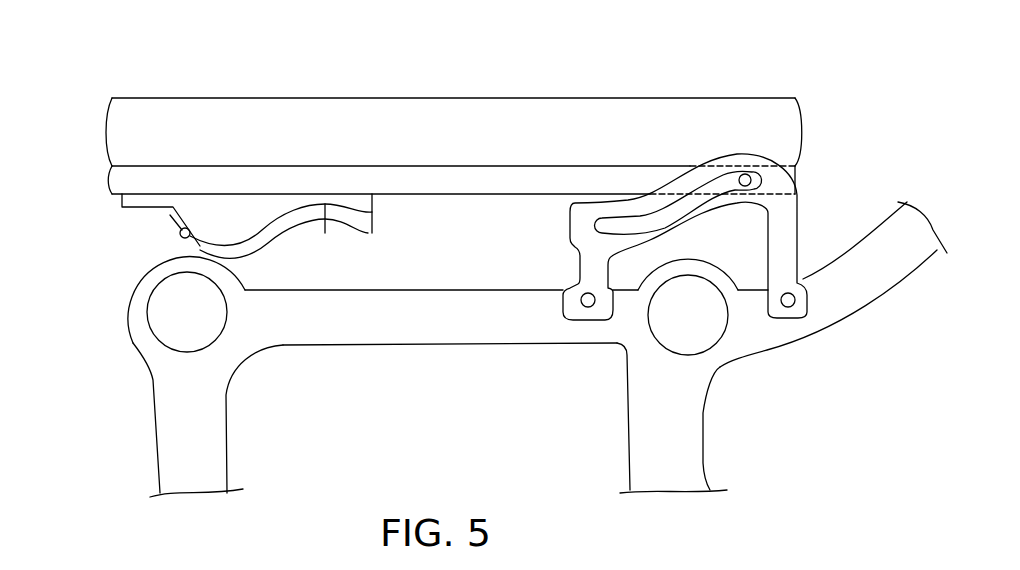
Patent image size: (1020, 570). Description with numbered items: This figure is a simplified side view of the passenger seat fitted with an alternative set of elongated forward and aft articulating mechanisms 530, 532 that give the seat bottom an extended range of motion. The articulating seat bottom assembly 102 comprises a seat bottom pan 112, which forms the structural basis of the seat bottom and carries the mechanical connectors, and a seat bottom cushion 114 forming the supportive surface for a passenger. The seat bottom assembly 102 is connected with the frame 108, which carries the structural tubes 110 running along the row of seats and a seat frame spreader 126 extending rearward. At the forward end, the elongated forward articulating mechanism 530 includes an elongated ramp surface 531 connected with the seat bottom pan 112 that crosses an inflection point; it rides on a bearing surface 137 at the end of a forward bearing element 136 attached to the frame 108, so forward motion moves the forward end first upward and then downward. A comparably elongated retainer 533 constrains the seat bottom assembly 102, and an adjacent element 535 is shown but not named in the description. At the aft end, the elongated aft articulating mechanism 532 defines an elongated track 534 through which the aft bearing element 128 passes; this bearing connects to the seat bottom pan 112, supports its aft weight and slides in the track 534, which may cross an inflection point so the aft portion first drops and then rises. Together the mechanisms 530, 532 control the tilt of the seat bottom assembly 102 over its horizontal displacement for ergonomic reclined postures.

The seat bottom assembly 102 is at (519, 62).
The frame 108 is at (410, 375).
The structural tube 110 is at (147, 329).
The seat bottom pan 112 is at (277, 165).
The seat bottom cushion 114 is at (645, 97).
The seat frame spreader 126 is at (846, 316).
The aft bearing element 128 is at (746, 174).
The forward bearing element 136 is at (177, 243).
The bearing surface 137 is at (170, 215).
The elongated forward articulating mechanism 530 is at (375, 208).
The elongated ramp surface 531 is at (326, 234).
The elongated aft articulating mechanism 532 is at (810, 220).
The elongated retainer 533 is at (258, 251).
The elongated track 534 is at (627, 236).
The tab 535 is at (146, 207).